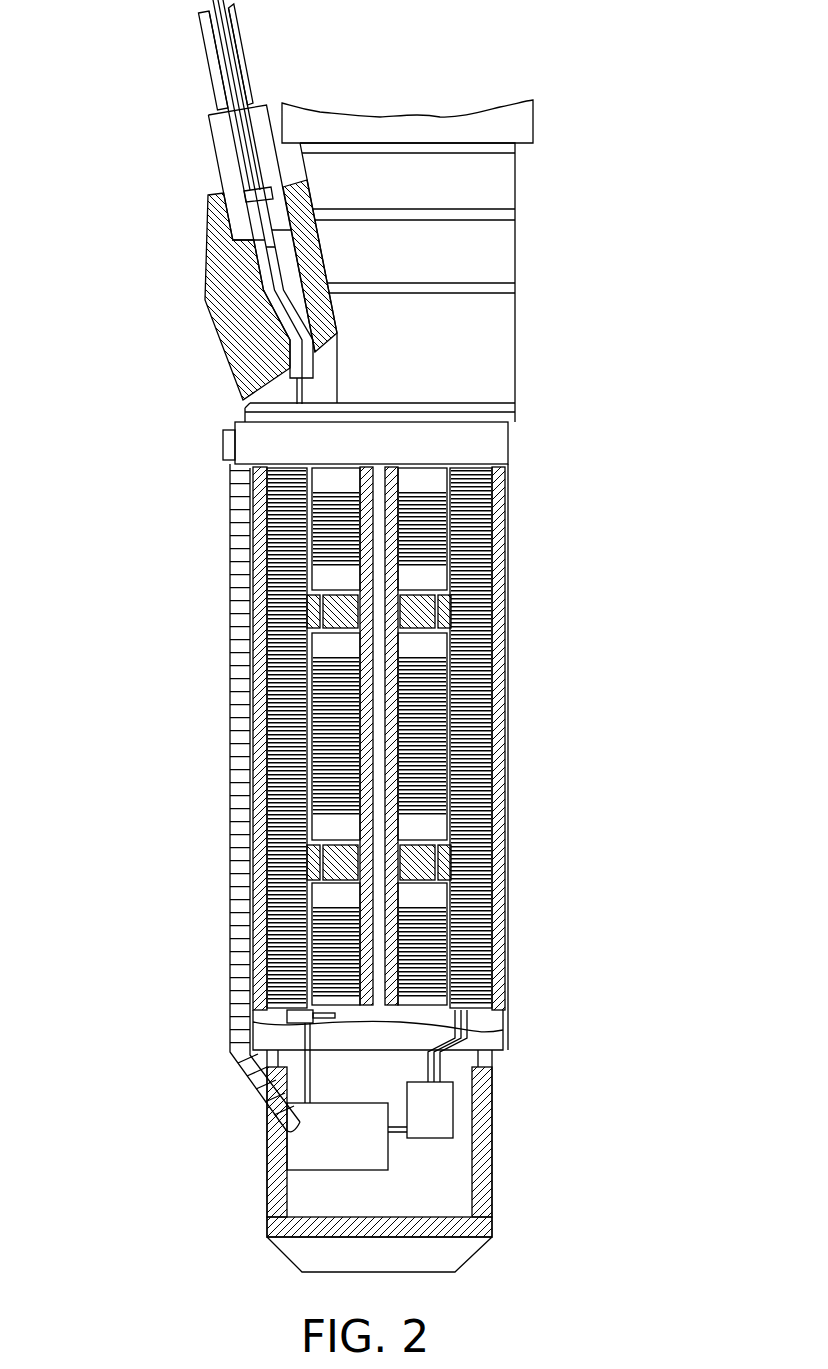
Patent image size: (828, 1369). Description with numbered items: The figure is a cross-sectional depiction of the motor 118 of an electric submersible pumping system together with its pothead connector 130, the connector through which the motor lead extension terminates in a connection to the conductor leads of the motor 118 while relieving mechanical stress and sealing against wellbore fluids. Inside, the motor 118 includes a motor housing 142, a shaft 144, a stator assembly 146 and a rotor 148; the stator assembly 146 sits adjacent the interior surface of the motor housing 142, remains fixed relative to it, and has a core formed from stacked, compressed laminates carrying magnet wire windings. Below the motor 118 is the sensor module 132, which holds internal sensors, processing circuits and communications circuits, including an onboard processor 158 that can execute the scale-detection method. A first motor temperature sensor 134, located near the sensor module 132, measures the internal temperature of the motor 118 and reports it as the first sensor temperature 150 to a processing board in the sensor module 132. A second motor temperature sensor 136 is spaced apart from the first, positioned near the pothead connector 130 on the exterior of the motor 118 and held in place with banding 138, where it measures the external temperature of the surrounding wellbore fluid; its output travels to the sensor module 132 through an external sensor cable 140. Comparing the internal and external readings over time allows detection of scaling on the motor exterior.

The motor 118 is at (535, 756).
The pothead connector 130 is at (250, 358).
The sensor module 132 is at (483, 1190).
The first motor temperature sensor 134 is at (287, 1015).
The second motor temperature sensor 136 is at (222, 442).
The banding 138 is at (486, 447).
The external sensor cable 140 is at (237, 690).
The motor housing 142 is at (238, 535).
The shaft 144 is at (362, 813).
The stator assembly 146 is at (478, 923).
The rotor 148 is at (338, 752).
The first sensor temperature 150 is at (505, 1036).
The onboard processor 158 is at (358, 1149).